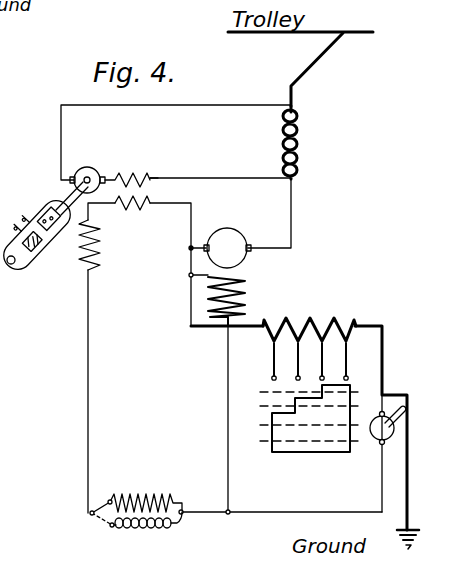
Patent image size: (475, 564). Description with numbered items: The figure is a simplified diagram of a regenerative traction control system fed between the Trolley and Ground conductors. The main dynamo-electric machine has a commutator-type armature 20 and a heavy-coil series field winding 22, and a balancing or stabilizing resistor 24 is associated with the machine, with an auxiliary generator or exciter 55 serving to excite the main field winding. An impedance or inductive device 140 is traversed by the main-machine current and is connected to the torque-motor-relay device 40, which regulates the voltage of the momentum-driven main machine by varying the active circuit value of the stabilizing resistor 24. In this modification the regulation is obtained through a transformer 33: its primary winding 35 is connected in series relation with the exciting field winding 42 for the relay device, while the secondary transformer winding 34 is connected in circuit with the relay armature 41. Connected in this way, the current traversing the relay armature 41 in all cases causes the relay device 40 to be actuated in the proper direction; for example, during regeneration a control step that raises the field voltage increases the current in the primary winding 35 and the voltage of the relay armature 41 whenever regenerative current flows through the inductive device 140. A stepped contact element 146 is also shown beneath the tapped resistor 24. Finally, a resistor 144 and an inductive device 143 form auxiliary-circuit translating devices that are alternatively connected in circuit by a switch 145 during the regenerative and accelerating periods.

The commutator-type armature 20 is at (239, 241).
The field winding 22 is at (247, 300).
The balancing or stabilizing resistor 24 is at (320, 320).
The transformer 33 is at (152, 182).
The secondary transformer winding 34 is at (141, 178).
The primary transformer winding 35 is at (132, 211).
The torque-motor-relay device 40 is at (48, 181).
The relay armature 41 is at (89, 169).
The exciting field winding 42 is at (79, 265).
The auxiliary generator or exciter 55 is at (387, 446).
The impedance or inductive device 140 is at (294, 156).
The inductive device 143 is at (148, 530).
The resistor 144 is at (150, 490).
The switch 145 is at (90, 513).
The controller contact segment 146 is at (313, 452).